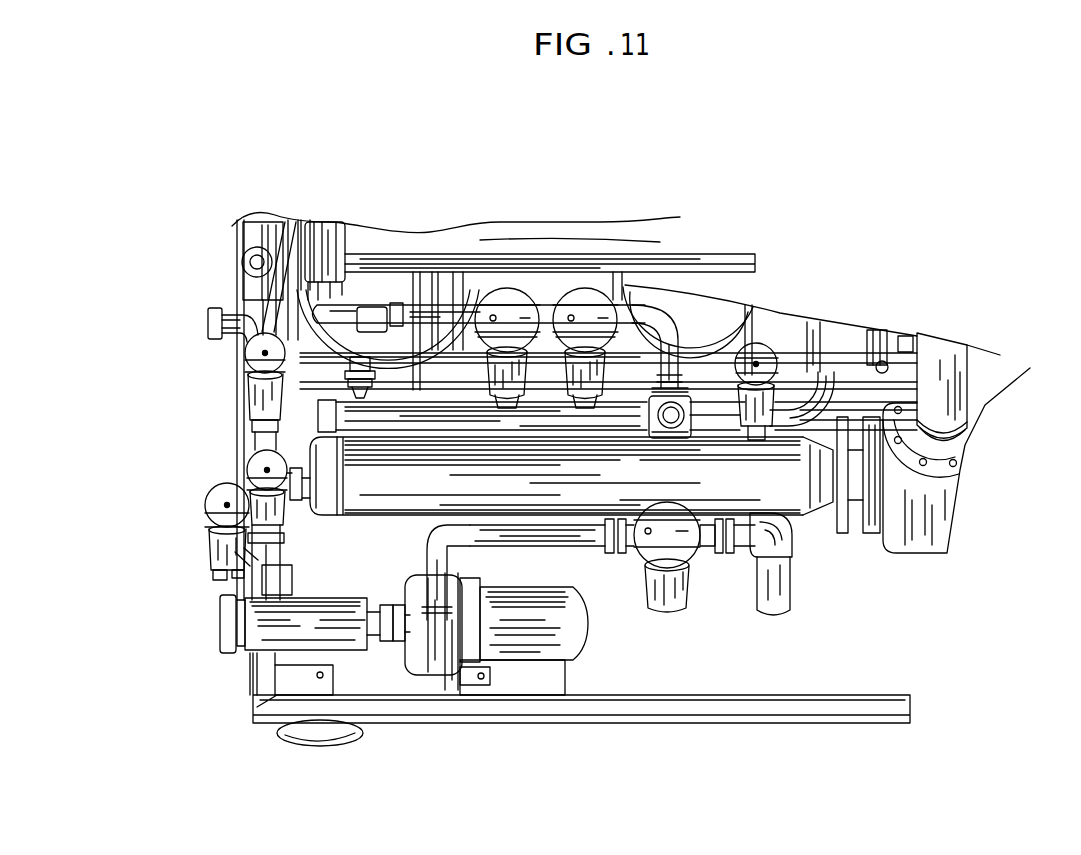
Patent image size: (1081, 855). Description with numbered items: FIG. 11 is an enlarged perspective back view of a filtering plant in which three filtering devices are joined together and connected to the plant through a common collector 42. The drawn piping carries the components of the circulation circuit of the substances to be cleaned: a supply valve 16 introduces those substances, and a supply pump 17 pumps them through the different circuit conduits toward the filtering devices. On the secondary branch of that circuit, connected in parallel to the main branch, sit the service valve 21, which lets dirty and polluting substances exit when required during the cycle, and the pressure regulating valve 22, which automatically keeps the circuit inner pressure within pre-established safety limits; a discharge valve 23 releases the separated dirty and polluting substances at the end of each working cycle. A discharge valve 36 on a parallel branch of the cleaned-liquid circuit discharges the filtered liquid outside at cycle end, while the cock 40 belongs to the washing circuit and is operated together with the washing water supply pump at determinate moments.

The supply valve 16 is at (207, 530).
The supply pump 17 is at (546, 629).
The service valve 21 is at (240, 260).
The pressure regulating valve 22 is at (253, 363).
The discharge valve 23 is at (246, 457).
The discharge valve 36 is at (765, 358).
The cock 40 is at (700, 418).
The common collector 42 is at (770, 490).